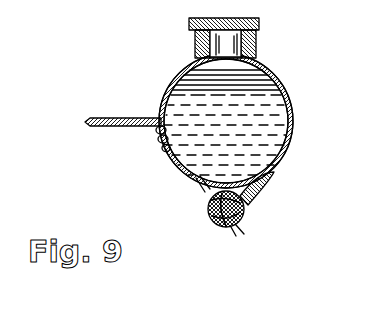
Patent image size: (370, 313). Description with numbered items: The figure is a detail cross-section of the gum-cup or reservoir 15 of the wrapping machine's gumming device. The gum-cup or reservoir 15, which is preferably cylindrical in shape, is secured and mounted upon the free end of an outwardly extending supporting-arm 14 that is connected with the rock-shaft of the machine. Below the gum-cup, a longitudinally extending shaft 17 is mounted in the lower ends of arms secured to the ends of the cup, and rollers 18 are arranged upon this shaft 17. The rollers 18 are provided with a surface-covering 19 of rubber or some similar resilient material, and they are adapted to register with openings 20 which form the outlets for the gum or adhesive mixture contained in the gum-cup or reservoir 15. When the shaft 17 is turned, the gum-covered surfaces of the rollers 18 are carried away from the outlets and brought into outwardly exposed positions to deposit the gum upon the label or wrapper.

The supporting-arm 14 is at (118, 109).
The gum-cup or reservoir 15 is at (275, 80).
The shaft 17 is at (243, 217).
The rollers 18 is at (213, 226).
The surface-covering 19 is at (251, 208).
The openings 20 is at (270, 171).